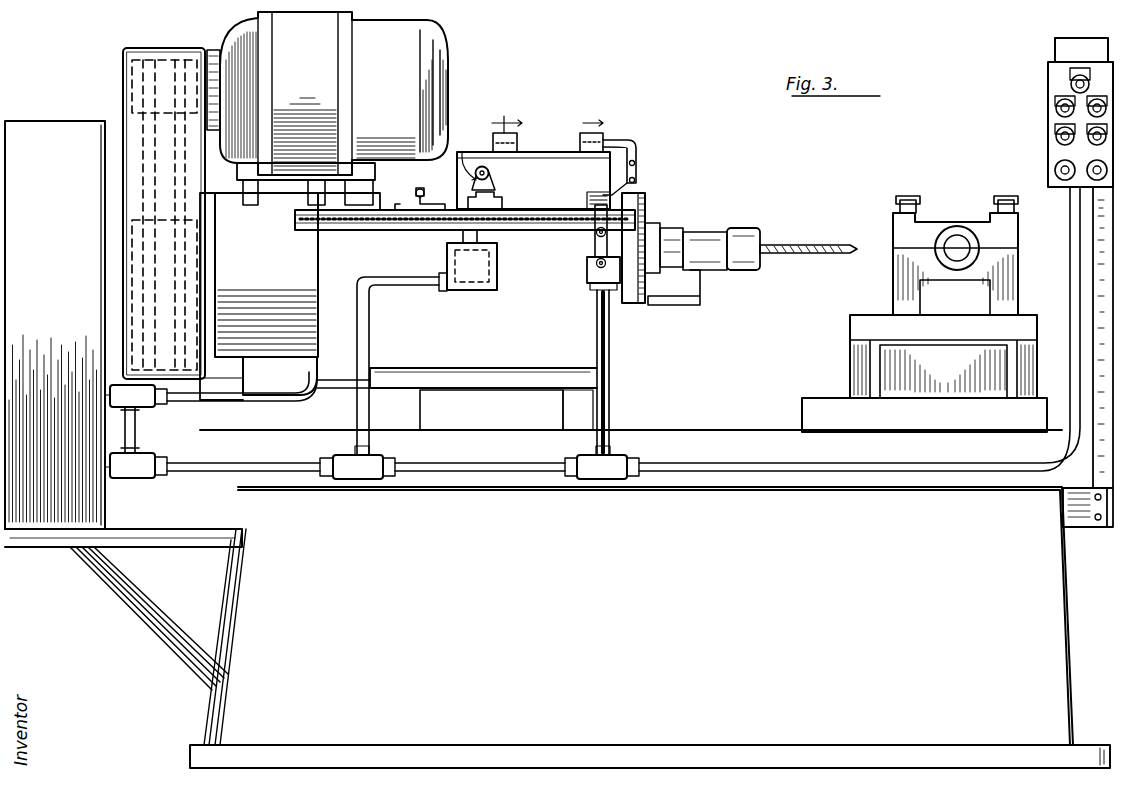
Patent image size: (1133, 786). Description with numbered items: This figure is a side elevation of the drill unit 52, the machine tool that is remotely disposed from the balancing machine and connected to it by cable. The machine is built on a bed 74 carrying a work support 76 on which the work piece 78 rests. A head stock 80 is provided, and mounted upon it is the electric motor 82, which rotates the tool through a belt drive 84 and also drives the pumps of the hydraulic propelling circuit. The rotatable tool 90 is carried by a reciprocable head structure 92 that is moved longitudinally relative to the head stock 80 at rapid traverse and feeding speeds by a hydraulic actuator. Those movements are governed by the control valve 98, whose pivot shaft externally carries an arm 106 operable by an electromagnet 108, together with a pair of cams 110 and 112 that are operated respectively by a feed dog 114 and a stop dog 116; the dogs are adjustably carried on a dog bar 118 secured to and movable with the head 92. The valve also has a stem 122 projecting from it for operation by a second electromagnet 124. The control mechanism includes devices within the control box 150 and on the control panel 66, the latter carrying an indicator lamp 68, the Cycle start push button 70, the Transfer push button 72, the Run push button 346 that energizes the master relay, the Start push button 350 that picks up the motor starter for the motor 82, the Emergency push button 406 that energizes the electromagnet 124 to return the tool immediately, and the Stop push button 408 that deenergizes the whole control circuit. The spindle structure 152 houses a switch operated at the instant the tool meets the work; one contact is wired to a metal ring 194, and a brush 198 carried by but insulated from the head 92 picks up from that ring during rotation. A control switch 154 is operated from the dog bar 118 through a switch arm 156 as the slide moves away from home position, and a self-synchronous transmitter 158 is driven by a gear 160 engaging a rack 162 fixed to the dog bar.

The drill unit 52 is at (686, 122).
The control panel 66 is at (1052, 68).
The indicator lamp 68 is at (1094, 80).
The Cycle start push button 70 is at (1056, 106).
The Transfer push button 72 is at (1050, 120).
The bed 74 is at (1055, 592).
The work support 76 is at (848, 331).
The work piece 78 is at (950, 246).
The head stock 80 is at (250, 342).
The electric motor 82 is at (236, 34).
The belt drive 84 is at (142, 135).
The rotatable tool 90 is at (776, 244).
The reciprocable head structure 92 is at (644, 200).
The control valve 98 is at (552, 152).
The arm 106 is at (462, 152).
The electromagnet 108 is at (504, 116).
The cam 110 is at (493, 182).
The cam 112 is at (472, 180).
The feed dog 114 is at (412, 200).
The stop dog 116 is at (498, 198).
The dog bar 118 is at (308, 280).
The stem 122 is at (632, 184).
The electromagnet 124 is at (602, 134).
The control box 150 is at (45, 122).
The spindle structure 152 is at (712, 236).
The control switch 154 is at (590, 280).
The switch arm 156 is at (596, 250).
The self-synchronous transmitter 158 is at (466, 284).
The gear 160 is at (466, 228).
The rack 162 is at (300, 216).
The metal ring 194 is at (696, 236).
The brush 198 is at (708, 284).
The Run push button 346 is at (1054, 136).
The Start push button 350 is at (1084, 138).
The Emergency push button 406 is at (1092, 164).
The Stop push button 408 is at (1058, 174).